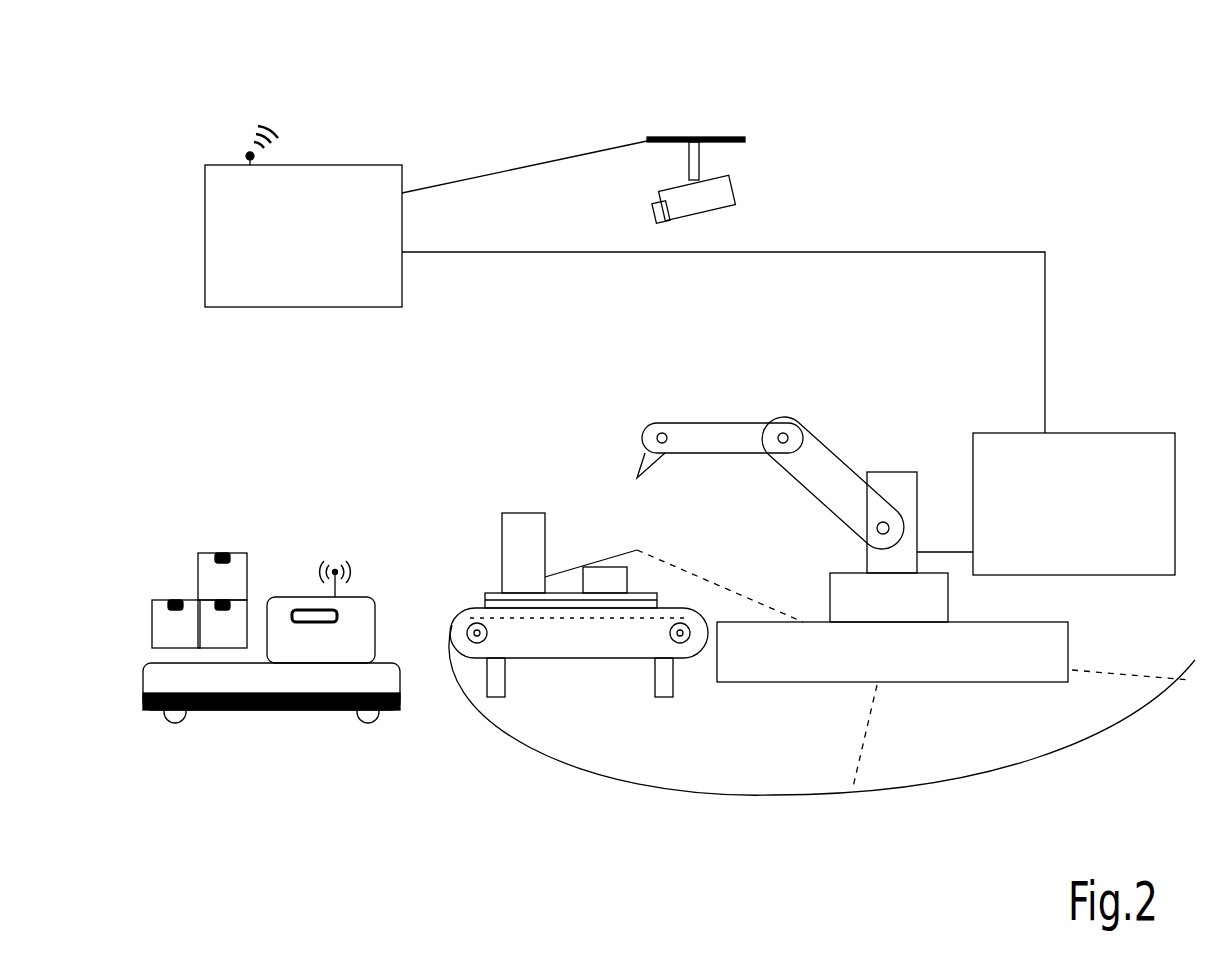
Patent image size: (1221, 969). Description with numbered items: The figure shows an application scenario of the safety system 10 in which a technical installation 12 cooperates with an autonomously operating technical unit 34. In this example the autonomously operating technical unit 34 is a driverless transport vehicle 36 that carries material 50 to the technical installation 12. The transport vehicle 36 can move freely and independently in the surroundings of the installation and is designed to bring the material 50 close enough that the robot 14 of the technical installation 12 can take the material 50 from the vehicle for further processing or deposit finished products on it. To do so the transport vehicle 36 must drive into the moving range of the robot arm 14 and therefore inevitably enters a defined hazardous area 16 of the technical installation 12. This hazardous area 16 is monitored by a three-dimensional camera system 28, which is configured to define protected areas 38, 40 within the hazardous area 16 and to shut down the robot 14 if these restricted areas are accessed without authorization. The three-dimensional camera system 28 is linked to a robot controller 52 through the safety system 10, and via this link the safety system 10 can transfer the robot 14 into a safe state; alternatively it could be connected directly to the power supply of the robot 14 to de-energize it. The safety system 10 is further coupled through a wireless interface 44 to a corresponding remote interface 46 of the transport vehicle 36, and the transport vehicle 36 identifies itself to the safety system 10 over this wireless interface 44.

The safety system 10 is at (360, 142).
The technical installation 12 is at (796, 451).
The robot 14 is at (745, 436).
The hazardous area 16 is at (773, 795).
The three-dimensional camera system 28 is at (735, 200).
The autonomously operating technical unit 34 is at (157, 516).
The driverless transport vehicle 36 is at (268, 678).
The protected area 38 is at (573, 720).
The protected area 40 is at (1050, 730).
The wireless interface 44 is at (250, 155).
The remote interface 46 is at (336, 570).
The material 50 is at (163, 622).
The robot controller 52 is at (1073, 458).